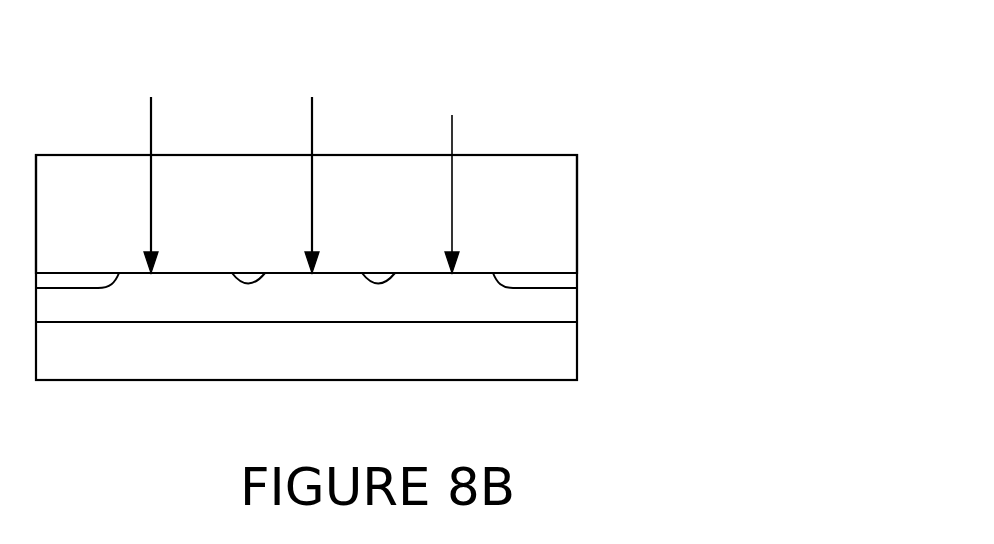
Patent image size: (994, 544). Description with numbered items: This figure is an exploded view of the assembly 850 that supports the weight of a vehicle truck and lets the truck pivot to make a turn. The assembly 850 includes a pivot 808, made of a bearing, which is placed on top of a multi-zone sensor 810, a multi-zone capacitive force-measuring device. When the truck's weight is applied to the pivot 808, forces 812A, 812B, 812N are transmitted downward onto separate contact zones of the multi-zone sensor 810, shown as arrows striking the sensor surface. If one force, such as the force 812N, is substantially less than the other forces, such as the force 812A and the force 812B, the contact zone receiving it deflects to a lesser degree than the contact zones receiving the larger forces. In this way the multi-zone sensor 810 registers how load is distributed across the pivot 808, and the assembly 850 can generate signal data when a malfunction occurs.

The pivot 808 is at (552, 177).
The multi-zone sensor 810 is at (590, 383).
The force 812A is at (153, 155).
The force 812B is at (321, 155).
The force 812N is at (462, 165).
The assembly 850 is at (540, 431).